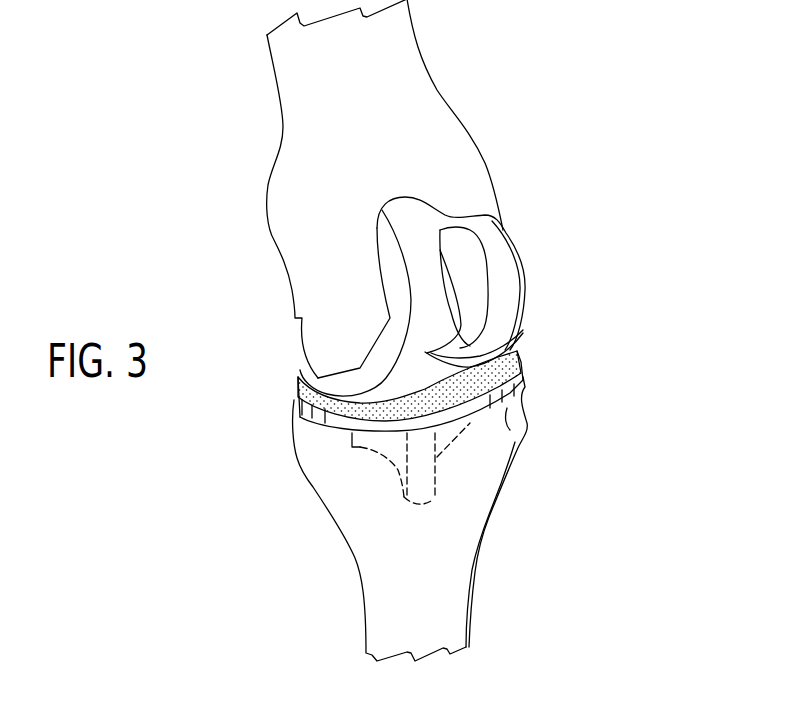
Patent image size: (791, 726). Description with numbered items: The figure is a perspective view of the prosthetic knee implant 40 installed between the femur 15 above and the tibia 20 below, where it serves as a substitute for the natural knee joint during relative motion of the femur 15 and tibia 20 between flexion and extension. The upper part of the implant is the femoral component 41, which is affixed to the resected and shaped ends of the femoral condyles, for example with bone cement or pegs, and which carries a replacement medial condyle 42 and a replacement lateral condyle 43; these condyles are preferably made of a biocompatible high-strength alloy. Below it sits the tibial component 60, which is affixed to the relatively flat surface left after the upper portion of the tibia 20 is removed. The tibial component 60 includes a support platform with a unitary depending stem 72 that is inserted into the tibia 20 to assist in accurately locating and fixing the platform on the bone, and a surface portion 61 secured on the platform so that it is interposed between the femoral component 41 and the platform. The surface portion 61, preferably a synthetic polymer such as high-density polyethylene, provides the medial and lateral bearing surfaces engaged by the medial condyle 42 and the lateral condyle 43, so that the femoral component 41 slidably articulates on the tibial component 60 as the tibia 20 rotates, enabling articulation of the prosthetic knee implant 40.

The femur 15 is at (392, 49).
The tibia 20 is at (462, 609).
The prosthetic knee implant 40 is at (448, 280).
The femoral component 41 is at (525, 240).
The replacement medial condyle 42 is at (511, 290).
The replacement lateral condyle 43 is at (435, 293).
The tibial component 60 is at (447, 362).
The surface portion 61 is at (515, 347).
The stem 72 is at (400, 504).